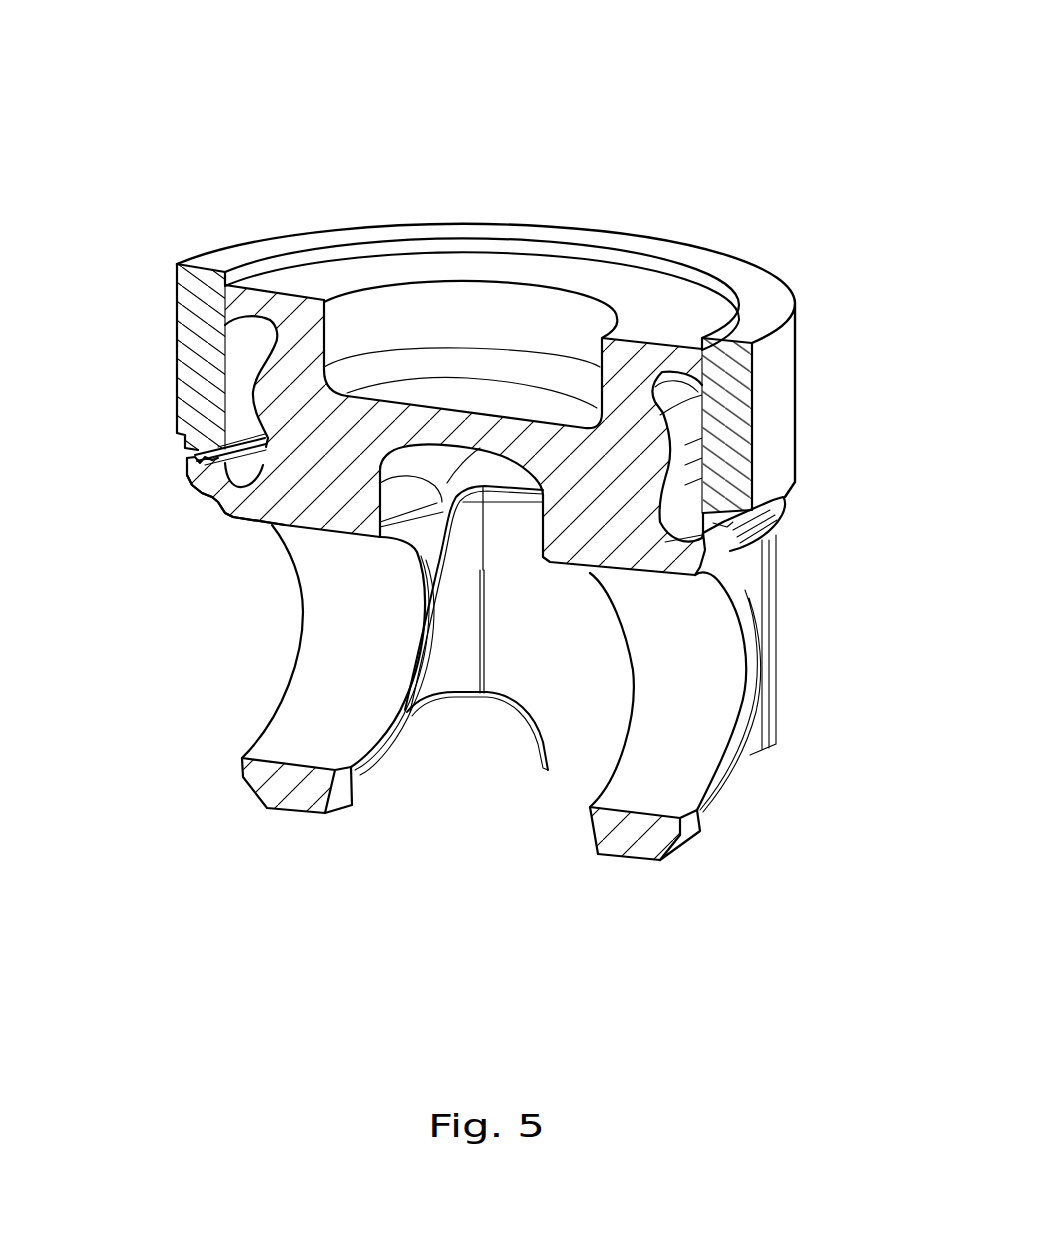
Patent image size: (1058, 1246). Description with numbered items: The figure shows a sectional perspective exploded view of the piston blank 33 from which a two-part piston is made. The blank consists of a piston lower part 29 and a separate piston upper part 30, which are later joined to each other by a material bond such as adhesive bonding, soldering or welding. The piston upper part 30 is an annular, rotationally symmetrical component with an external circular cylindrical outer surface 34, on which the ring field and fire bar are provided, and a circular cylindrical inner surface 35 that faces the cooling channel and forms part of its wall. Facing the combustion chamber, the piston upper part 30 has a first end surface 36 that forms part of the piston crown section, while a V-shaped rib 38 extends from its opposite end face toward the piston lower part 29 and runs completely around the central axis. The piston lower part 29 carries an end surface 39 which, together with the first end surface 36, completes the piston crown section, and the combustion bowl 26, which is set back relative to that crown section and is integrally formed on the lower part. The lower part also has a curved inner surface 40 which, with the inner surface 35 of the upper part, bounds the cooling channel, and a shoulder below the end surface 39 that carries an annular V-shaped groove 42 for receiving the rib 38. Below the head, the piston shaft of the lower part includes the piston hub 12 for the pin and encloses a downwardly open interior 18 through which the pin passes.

The piston blank 33 is at (488, 94).
The piston upper part 30 is at (680, 232).
The first end surface 36 is at (222, 257).
The outer surface 34 is at (175, 310).
The end surface 39 is at (680, 313).
The combustion bowl 26 is at (467, 378).
The inner surface 35 is at (222, 358).
The rib 38 is at (200, 452).
The piston lower part 29 is at (211, 511).
The curved inner surface 40 is at (673, 430).
The groove 42 is at (713, 537).
The piston hub 12 is at (700, 817).
The interior 18 is at (548, 638).